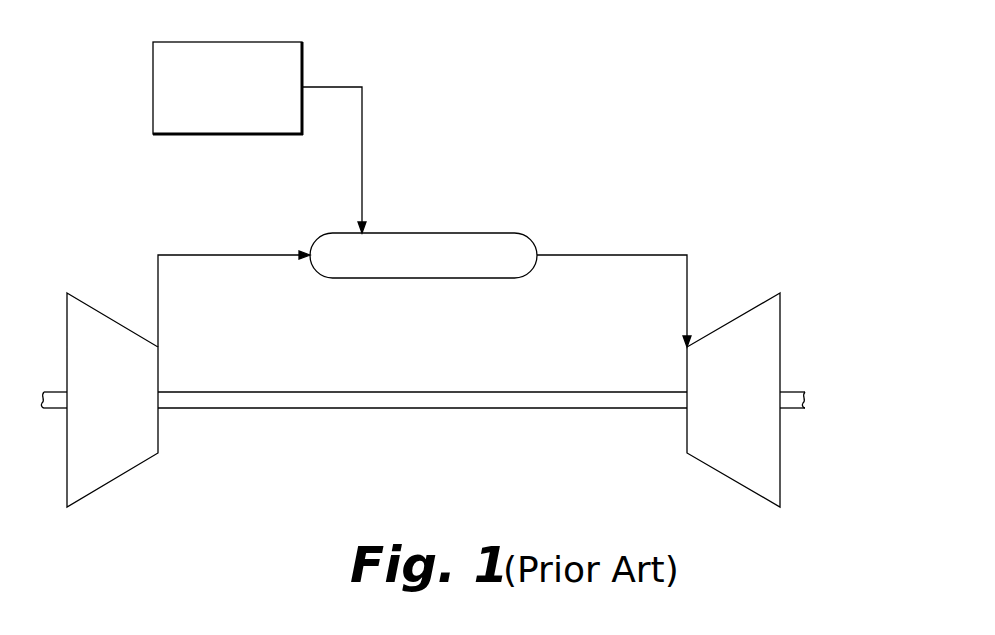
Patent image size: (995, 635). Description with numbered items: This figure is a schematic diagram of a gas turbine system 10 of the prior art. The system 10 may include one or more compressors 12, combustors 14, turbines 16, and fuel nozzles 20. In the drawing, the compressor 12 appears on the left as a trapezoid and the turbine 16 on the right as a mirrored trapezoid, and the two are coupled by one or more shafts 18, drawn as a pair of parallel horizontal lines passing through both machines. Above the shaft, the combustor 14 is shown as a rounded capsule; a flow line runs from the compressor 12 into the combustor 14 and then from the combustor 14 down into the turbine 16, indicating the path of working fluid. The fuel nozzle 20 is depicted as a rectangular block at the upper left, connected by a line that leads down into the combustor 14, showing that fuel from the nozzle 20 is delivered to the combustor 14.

The gas turbine system 10 is at (670, 172).
The compressor 12 is at (110, 481).
The combustor 14 is at (424, 233).
The turbine 16 is at (780, 311).
The shaft 18 is at (425, 410).
The fuel nozzle 20 is at (302, 42).